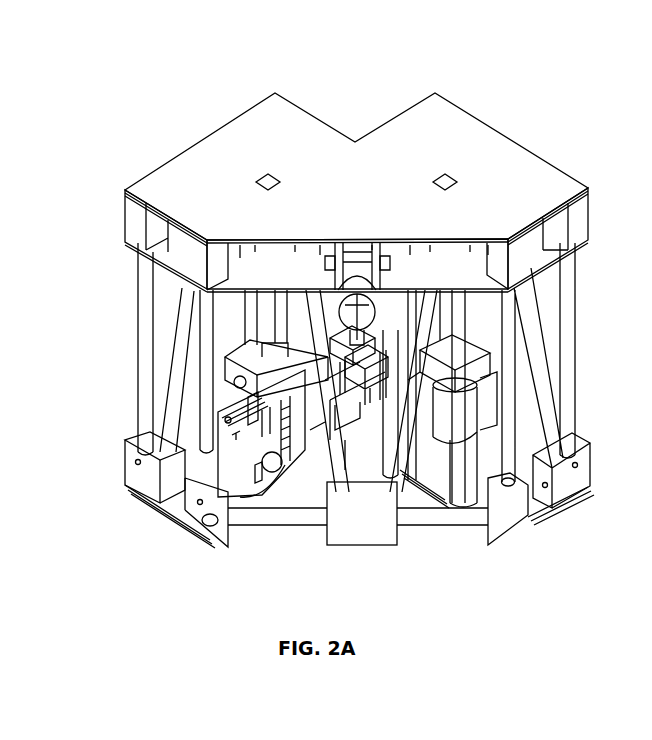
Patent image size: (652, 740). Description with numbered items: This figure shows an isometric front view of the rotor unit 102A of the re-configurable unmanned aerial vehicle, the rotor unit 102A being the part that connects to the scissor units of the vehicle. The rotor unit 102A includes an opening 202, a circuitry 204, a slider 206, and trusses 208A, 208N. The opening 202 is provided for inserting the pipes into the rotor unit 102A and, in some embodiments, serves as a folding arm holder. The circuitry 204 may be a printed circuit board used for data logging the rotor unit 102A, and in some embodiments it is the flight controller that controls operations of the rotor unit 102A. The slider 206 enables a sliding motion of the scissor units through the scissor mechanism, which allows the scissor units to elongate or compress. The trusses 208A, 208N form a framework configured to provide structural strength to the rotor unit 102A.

The rotor unit 102A is at (120, 48).
The opening 202 is at (360, 296).
The circuitry 204 is at (213, 448).
The slider 206 is at (433, 380).
The truss 208A is at (307, 468).
The truss 208N is at (367, 470).